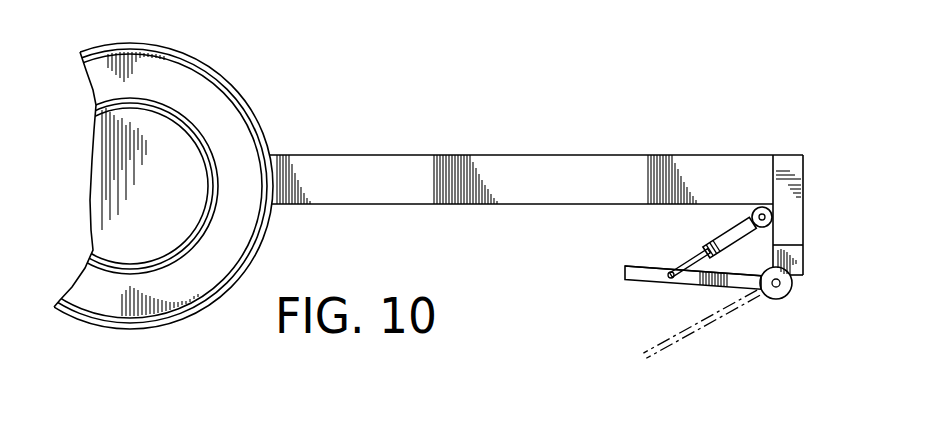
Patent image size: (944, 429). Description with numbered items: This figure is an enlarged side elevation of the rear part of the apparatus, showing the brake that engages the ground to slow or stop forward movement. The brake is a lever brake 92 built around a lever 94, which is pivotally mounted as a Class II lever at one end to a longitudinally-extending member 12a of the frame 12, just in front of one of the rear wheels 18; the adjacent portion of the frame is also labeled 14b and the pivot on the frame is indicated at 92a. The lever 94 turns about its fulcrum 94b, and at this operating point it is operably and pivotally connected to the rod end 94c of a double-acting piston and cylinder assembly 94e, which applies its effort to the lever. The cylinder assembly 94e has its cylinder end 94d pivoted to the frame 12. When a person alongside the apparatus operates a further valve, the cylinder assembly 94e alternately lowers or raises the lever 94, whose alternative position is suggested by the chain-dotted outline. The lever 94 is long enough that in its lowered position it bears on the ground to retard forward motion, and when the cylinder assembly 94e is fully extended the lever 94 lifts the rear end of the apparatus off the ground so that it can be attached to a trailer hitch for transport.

The rear wheel 18 is at (198, 84).
The frame 12 is at (590, 173).
The longitudinally-extending member 12a is at (797, 207).
The lower block portion 14b is at (804, 258).
The lever brake 92 is at (600, 256).
The pivot 92a is at (782, 298).
The lever 94 is at (627, 279).
The fulcrum 94b is at (668, 278).
The rod end 94c is at (710, 289).
The cylinder end 94d is at (762, 206).
The double-acting piston and cylinder assembly 94e is at (702, 231).